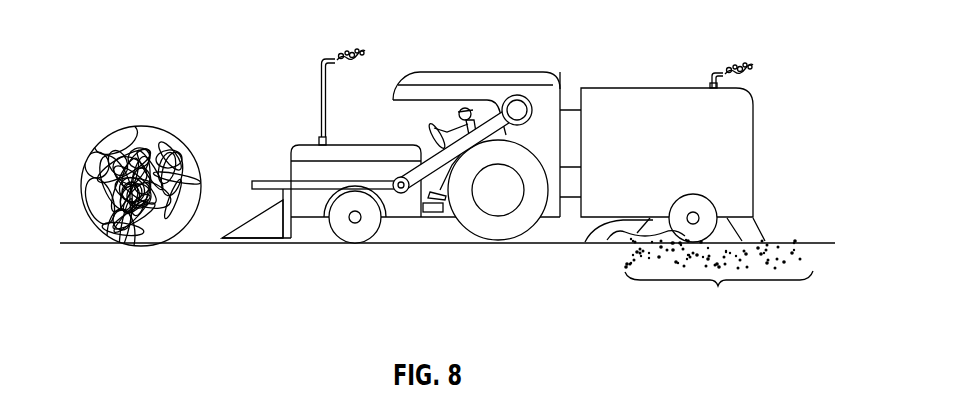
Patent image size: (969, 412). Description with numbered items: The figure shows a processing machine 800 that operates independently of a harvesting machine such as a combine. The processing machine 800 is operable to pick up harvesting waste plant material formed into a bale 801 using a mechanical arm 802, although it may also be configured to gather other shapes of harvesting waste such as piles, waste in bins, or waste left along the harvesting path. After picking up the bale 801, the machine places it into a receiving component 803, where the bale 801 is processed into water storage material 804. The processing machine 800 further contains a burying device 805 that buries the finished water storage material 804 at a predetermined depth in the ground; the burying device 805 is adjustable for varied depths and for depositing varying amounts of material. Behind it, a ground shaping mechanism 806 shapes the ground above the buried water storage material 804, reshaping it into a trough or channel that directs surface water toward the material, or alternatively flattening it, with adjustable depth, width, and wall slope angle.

The processing machine 800 is at (303, 44).
The bale 801 is at (122, 132).
The mechanical arm 802 is at (268, 181).
The receiving component 803 is at (647, 98).
The water storage material 804 is at (718, 277).
The burying device 805 is at (619, 244).
The ground shaping mechanism 806 is at (750, 229).